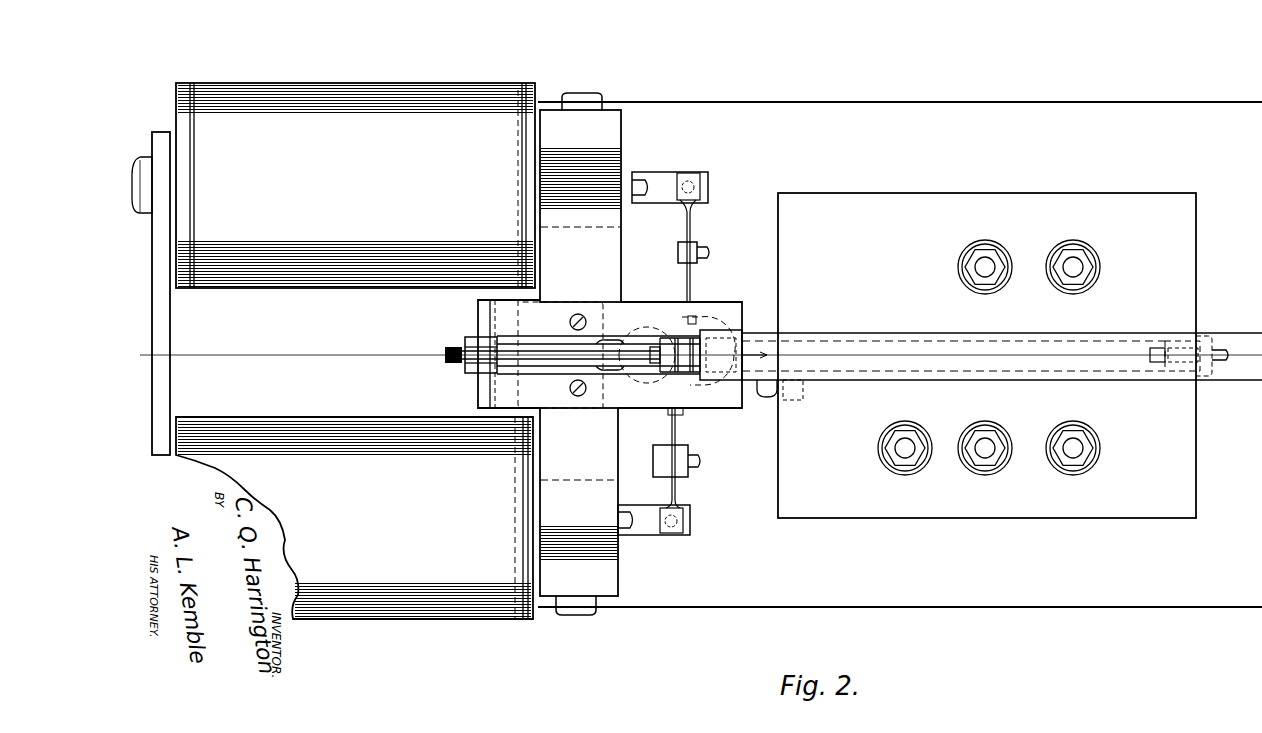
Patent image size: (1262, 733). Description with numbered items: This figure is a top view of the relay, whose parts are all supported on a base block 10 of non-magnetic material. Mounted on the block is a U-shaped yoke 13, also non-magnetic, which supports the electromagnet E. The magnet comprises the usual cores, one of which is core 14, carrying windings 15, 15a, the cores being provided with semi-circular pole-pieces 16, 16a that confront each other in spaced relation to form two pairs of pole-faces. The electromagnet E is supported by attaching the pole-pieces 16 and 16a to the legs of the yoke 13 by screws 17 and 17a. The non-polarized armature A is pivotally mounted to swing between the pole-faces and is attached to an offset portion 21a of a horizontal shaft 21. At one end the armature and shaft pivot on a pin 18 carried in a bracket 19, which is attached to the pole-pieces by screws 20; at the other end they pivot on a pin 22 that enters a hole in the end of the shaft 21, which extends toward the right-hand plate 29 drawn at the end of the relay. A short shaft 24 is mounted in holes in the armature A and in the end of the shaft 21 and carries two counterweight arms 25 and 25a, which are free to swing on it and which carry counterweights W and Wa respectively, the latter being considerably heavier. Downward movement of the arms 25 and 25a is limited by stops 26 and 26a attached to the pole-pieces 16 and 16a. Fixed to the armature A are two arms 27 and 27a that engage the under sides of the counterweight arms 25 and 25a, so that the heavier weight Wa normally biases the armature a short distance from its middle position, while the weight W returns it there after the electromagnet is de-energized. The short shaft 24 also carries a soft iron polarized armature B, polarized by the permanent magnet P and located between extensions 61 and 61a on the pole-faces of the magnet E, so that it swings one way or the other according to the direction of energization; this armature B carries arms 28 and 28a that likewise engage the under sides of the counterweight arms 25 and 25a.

The base block 10 is at (1245, 608).
The U-shaped yoke 13 is at (608, 598).
The core 14 is at (150, 150).
The winding 15 is at (355, 185).
The winding 15a is at (354, 518).
The pole-piece 16 is at (622, 246).
The pole-piece 16a is at (618, 470).
The screw 17 is at (582, 92).
The screw 17a is at (585, 617).
The pin 18 is at (497, 340).
The bracket 19 is at (507, 408).
The screws 20 is at (583, 314).
The horizontal shaft 21 is at (860, 340).
The offset portion 21a is at (778, 388).
The pin 22 is at (1155, 345).
The short shaft 24 is at (736, 345).
The counterweight arm 25 is at (686, 231).
The counterweight arm 25a is at (656, 458).
The stop 26 is at (672, 166).
The stop 26a is at (662, 536).
The arm 27 is at (640, 300).
The arm 27a is at (625, 395).
The arm 28 is at (705, 320).
The arm 28a is at (718, 395).
The mounting plate 29 is at (1172, 520).
The extension 61 is at (740, 298).
The extension 61a is at (708, 410).
The non-polarized armature A is at (497, 363).
The polarized armature B is at (742, 345).
The electromagnet E is at (398, 82).
The permanent magnet P is at (1236, 382).
The counterweight W is at (700, 250).
The counterweight Wa is at (690, 477).